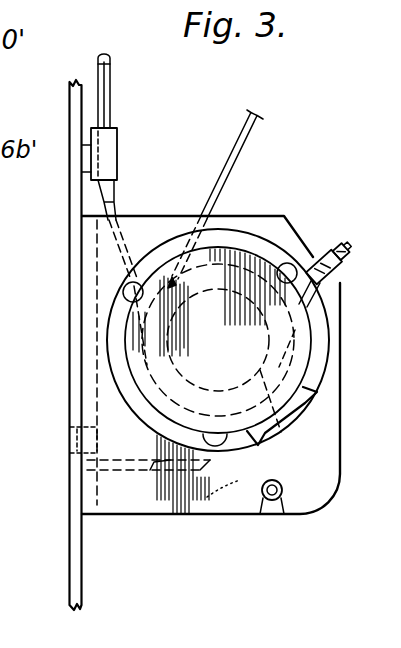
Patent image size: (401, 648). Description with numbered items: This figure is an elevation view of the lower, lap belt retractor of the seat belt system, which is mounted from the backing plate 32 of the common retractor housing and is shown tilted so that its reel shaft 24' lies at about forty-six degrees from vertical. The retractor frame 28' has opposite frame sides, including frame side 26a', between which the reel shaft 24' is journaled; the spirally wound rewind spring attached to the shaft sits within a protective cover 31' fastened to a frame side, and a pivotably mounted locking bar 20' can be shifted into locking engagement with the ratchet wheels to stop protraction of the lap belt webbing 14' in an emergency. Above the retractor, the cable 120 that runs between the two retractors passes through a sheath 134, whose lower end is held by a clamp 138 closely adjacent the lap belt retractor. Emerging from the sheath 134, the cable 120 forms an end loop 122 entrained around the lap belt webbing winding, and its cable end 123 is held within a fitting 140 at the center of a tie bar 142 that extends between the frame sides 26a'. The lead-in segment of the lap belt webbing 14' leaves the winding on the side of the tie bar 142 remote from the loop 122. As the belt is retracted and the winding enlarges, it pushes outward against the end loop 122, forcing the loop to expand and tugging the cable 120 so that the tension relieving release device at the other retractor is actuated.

The backing plate 32 is at (77, 563).
The locking bar 20' is at (205, 391).
The retractor frame 28' is at (170, 340).
The end loop 122 is at (143, 341).
The cable end 123 is at (270, 316).
The reel shaft 24' is at (282, 397).
The lap belt webbing 14' is at (242, 194).
The protective cover 31' is at (222, 222).
The sheath 134 is at (112, 73).
The clamp 138 is at (106, 150).
The cable 120 is at (112, 205).
The tie bar 142 is at (311, 250).
The fitting 140 is at (333, 245).
The frame side 26a' is at (260, 527).